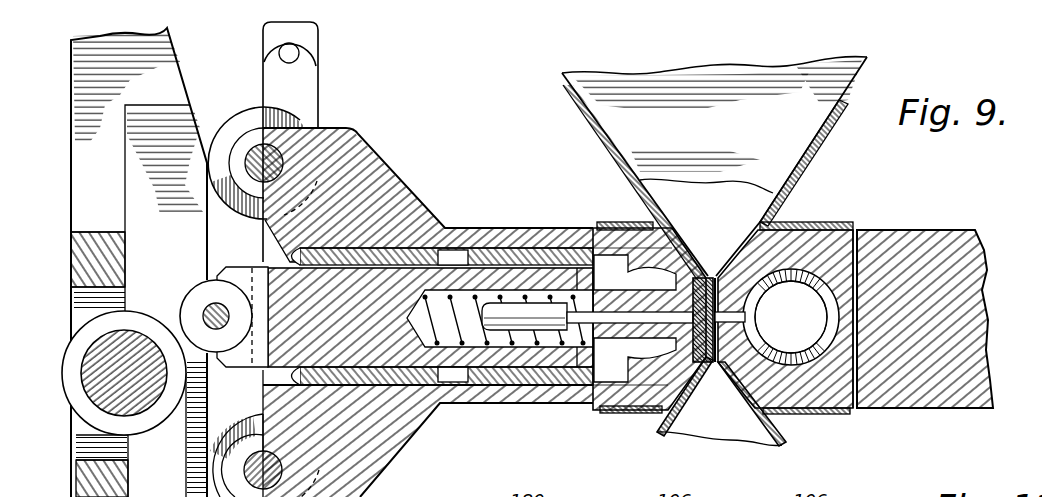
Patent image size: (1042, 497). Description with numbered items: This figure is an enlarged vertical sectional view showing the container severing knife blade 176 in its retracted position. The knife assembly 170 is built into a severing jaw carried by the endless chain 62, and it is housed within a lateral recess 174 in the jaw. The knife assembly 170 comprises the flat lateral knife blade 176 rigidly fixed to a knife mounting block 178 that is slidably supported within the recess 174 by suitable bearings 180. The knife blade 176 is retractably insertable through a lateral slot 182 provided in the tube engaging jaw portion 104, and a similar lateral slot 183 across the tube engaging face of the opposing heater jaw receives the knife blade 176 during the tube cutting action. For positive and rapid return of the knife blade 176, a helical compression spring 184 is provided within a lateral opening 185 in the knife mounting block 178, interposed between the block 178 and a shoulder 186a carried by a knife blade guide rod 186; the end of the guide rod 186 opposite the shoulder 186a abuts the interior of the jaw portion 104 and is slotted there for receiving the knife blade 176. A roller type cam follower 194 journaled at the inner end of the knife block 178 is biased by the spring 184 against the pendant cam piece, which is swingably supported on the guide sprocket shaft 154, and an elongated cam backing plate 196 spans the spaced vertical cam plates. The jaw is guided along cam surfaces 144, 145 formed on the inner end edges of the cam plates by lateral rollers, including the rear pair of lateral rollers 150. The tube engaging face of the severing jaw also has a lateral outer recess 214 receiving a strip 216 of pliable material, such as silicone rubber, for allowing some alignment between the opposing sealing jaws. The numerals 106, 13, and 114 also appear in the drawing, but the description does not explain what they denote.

The cam surface 145 is at (177, 64).
The rear pair of lateral rollers 150 is at (230, 128).
The endless chain 62 is at (302, 66).
The knife assembly 170 is at (503, 226).
The funnel wall 106 is at (587, 121).
The bearings 180 is at (393, 232).
The lateral recess 174 is at (447, 250).
The knife blade 176 is at (600, 226).
The section line 13 is at (654, 220).
The lateral outer recess 214 is at (708, 275).
The strip of pliable material 216 is at (793, 228).
The tube engaging jaw portion 104 is at (855, 228).
The lateral slot 183 is at (756, 303).
The lateral slot 182 is at (725, 345).
The knife blade guide rod 186 is at (652, 343).
The shoulder 186a is at (565, 400).
The lateral opening 185 is at (478, 393).
The helical compression spring 184 is at (452, 345).
The knife mounting block 178 is at (312, 327).
The cam follower 194 is at (192, 300).
The guide sprocket shaft 154 is at (107, 387).
The cam backing plate 196 is at (85, 476).
The cam surface 144 is at (212, 428).
The flange 114 is at (803, 386).